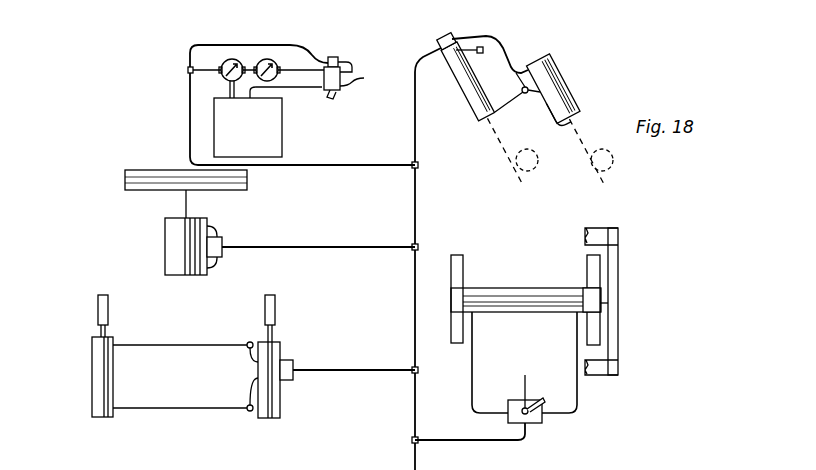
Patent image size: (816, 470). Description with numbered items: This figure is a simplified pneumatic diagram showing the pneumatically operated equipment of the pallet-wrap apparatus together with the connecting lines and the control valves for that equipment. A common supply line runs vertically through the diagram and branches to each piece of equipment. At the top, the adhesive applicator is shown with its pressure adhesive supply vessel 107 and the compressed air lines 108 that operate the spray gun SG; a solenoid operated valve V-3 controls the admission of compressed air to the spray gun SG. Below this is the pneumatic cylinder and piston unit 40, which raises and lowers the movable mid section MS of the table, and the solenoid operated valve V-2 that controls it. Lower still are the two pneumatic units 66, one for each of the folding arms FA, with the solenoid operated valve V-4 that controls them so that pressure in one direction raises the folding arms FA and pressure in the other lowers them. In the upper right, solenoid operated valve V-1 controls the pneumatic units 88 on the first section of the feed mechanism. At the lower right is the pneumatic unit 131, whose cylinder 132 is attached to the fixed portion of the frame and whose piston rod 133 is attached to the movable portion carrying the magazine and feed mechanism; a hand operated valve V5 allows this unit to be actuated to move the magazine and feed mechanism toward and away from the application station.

The compressed air lines 108 is at (190, 104).
The pressure adhesive supply vessel 107 is at (283, 126).
The solenoid operated valve V-3 is at (341, 57).
The spray gun SG is at (365, 79).
The mid section MS is at (178, 170).
The pneumatic cylinder and piston unit 40 is at (163, 244).
The solenoid operated valve V-2 is at (222, 249).
The folding arms FA is at (103, 295).
The pneumatic unit 66 is at (88, 394).
The solenoid operated valve V-4 is at (291, 380).
The solenoid operated valve V-1 is at (447, 40).
The pneumatic units 88 is at (481, 118).
The pneumatic unit 131 is at (549, 280).
The cylinder 132 is at (503, 314).
The piston rod 133 is at (604, 303).
The hand operated valve V5 is at (535, 424).